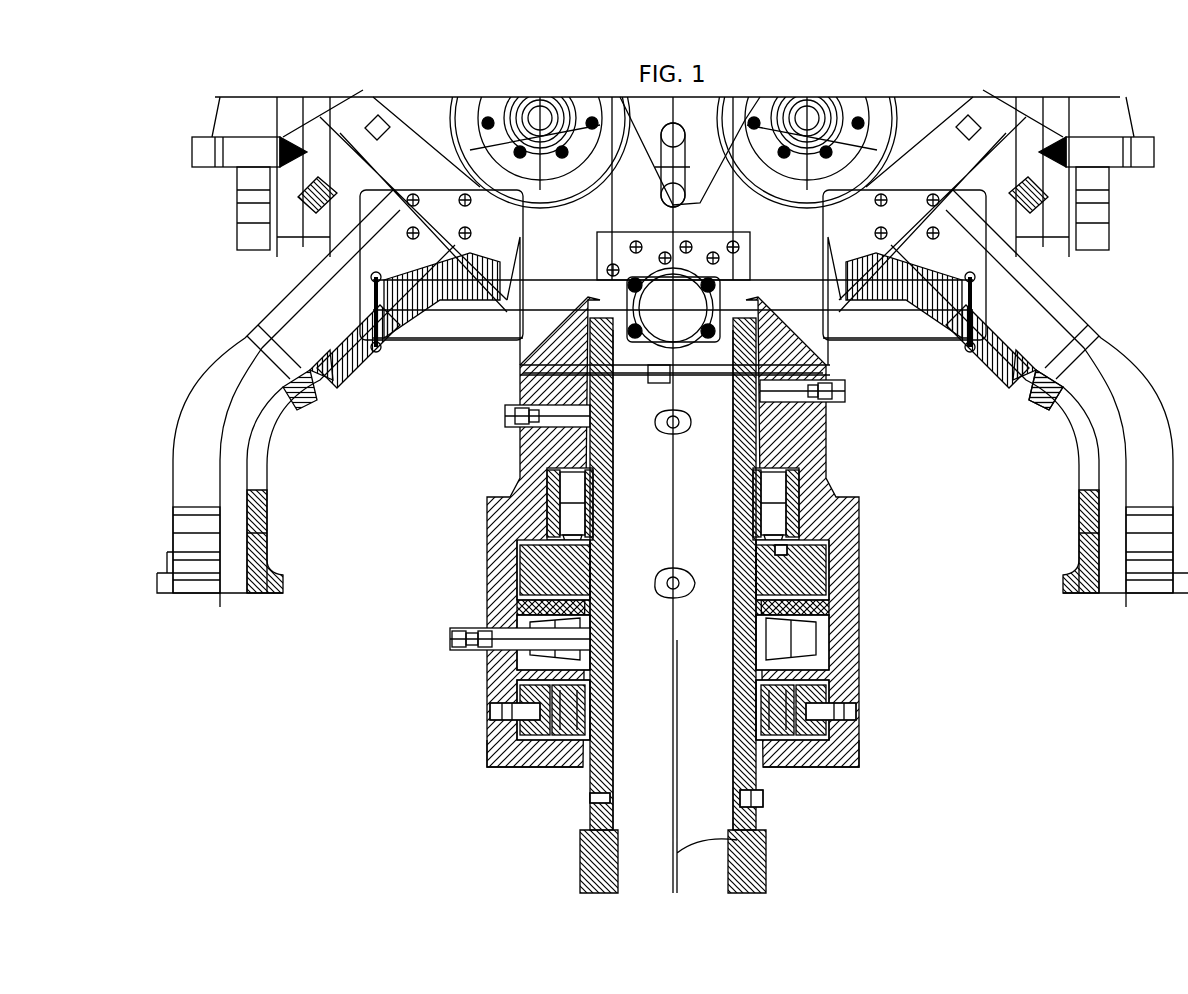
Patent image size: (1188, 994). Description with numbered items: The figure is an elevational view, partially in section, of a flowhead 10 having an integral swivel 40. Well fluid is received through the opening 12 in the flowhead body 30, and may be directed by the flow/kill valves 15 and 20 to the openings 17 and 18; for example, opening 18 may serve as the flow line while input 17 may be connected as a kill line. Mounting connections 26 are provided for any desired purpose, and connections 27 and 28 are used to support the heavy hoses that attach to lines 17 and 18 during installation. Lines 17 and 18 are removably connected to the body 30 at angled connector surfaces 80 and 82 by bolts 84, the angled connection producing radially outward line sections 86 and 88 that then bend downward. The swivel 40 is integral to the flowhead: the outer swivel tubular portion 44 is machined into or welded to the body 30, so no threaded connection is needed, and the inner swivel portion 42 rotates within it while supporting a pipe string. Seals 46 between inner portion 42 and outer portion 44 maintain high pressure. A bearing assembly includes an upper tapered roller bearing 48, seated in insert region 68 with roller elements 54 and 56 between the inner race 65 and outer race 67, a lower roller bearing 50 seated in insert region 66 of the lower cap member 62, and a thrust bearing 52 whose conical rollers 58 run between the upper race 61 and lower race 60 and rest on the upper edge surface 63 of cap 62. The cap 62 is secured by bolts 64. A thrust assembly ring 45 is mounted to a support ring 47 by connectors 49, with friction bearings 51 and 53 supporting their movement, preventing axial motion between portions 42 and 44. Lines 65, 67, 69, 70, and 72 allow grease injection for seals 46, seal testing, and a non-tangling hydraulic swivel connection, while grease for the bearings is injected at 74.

The flowhead 10 is at (1002, 66).
The opening 12 is at (680, 850).
The flow/kill valve 15 is at (520, 160).
The opening 17 is at (235, 490).
The opening 18 is at (1100, 490).
The flow/kill valve 20 is at (818, 160).
The connection 26 is at (700, 252).
The connection 27 is at (1090, 232).
The connection 28 is at (250, 205).
The flowhead body 30 is at (840, 350).
The swivel 40 is at (670, 531).
The inner swivel portion 42 is at (600, 830).
The outer swivel tubular portion 44 is at (520, 530).
The thrust assembly ring 45 is at (790, 555).
The seals 46 is at (560, 380).
The support ring 47 is at (520, 600).
The load bearing 48 is at (487, 508).
The connectors 49 is at (585, 548).
The load bearing 50 is at (830, 662).
The friction bearing 51 is at (615, 585).
The thrust bearing 52 is at (830, 600).
The friction bearing 53 is at (590, 520).
The roller elements 54 is at (547, 480).
The roller elements 56 is at (520, 568).
The rollers 58 is at (830, 632).
The lower race 60 is at (585, 680).
The upper race 61 is at (625, 650).
The lower cap member 62 is at (830, 755).
The upper edge surface 63 is at (492, 745).
The bolts 64 is at (856, 712).
The inner race / line 65 is at (745, 540).
The insert region 66 is at (560, 740).
The outer race / line 67 is at (745, 470).
The insert region 68 is at (800, 520).
The line / connector 69 is at (763, 798).
The line / connector 70 is at (830, 395).
The line / connector 72 is at (520, 418).
The grease injection point 74 is at (455, 633).
The angled connector surface 80 is at (1040, 280).
The angled connector surface 82 is at (373, 178).
The bolts 84 is at (973, 178).
The line section 86 is at (1040, 400).
The line section 88 is at (278, 312).